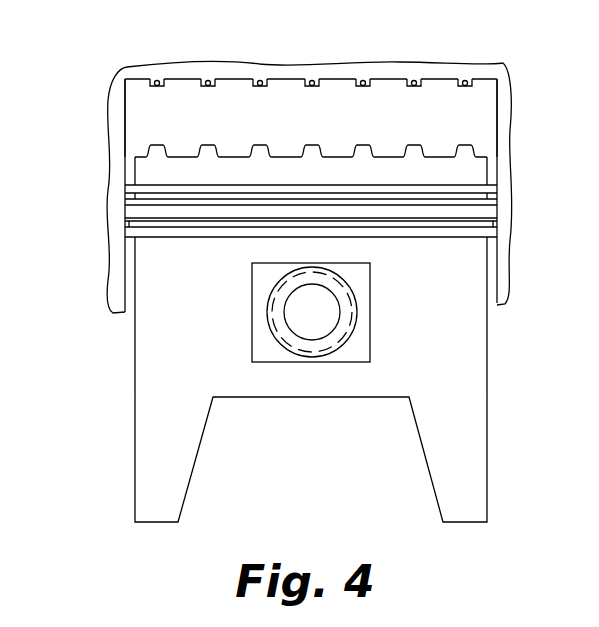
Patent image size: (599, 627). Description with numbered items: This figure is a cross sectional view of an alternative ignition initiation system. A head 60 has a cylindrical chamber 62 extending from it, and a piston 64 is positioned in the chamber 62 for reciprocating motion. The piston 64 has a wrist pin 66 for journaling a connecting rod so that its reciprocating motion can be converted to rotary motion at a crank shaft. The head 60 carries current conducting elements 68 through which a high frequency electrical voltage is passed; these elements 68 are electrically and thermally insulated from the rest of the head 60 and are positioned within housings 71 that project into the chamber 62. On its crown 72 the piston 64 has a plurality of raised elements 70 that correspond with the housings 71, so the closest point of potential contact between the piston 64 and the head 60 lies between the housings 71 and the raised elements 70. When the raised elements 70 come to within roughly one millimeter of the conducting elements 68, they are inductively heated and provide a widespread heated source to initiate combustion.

The head 60 is at (232, 80).
The cylindrical chamber 62 is at (127, 250).
The piston 64 is at (458, 263).
The wrist pin 66 is at (353, 312).
The current conducting elements 68 is at (157, 81).
The raised elements 70 is at (205, 145).
The housings 71 is at (161, 88).
The crown 72 is at (228, 155).